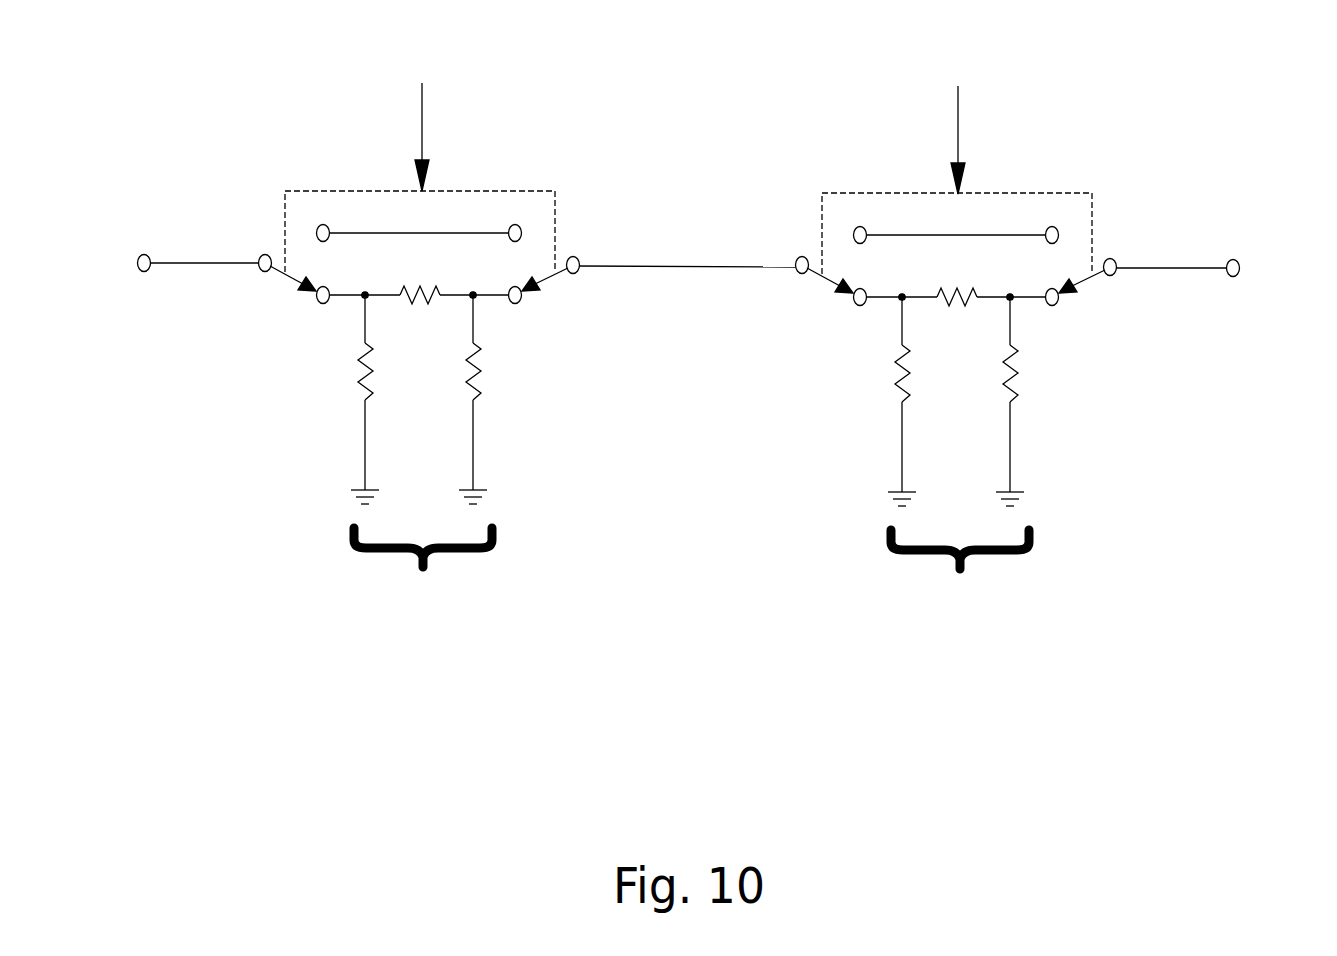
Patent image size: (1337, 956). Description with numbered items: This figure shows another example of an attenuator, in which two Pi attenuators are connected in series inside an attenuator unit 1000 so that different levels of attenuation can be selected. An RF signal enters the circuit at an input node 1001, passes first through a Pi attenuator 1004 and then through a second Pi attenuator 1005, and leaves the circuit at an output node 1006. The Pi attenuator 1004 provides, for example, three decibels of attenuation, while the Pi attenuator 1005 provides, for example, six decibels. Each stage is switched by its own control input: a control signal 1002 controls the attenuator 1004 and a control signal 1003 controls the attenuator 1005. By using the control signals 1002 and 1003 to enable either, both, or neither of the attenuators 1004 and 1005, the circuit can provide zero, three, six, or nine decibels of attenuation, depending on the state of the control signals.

The attenuator unit 1000 is at (686, 334).
The input node 1001 is at (138, 257).
The control signal 1002 is at (422, 122).
The control signal 1003 is at (960, 125).
The Pi attenuator 1004 is at (421, 467).
The Pi attenuator 1005 is at (958, 468).
The output node 1006 is at (1239, 266).